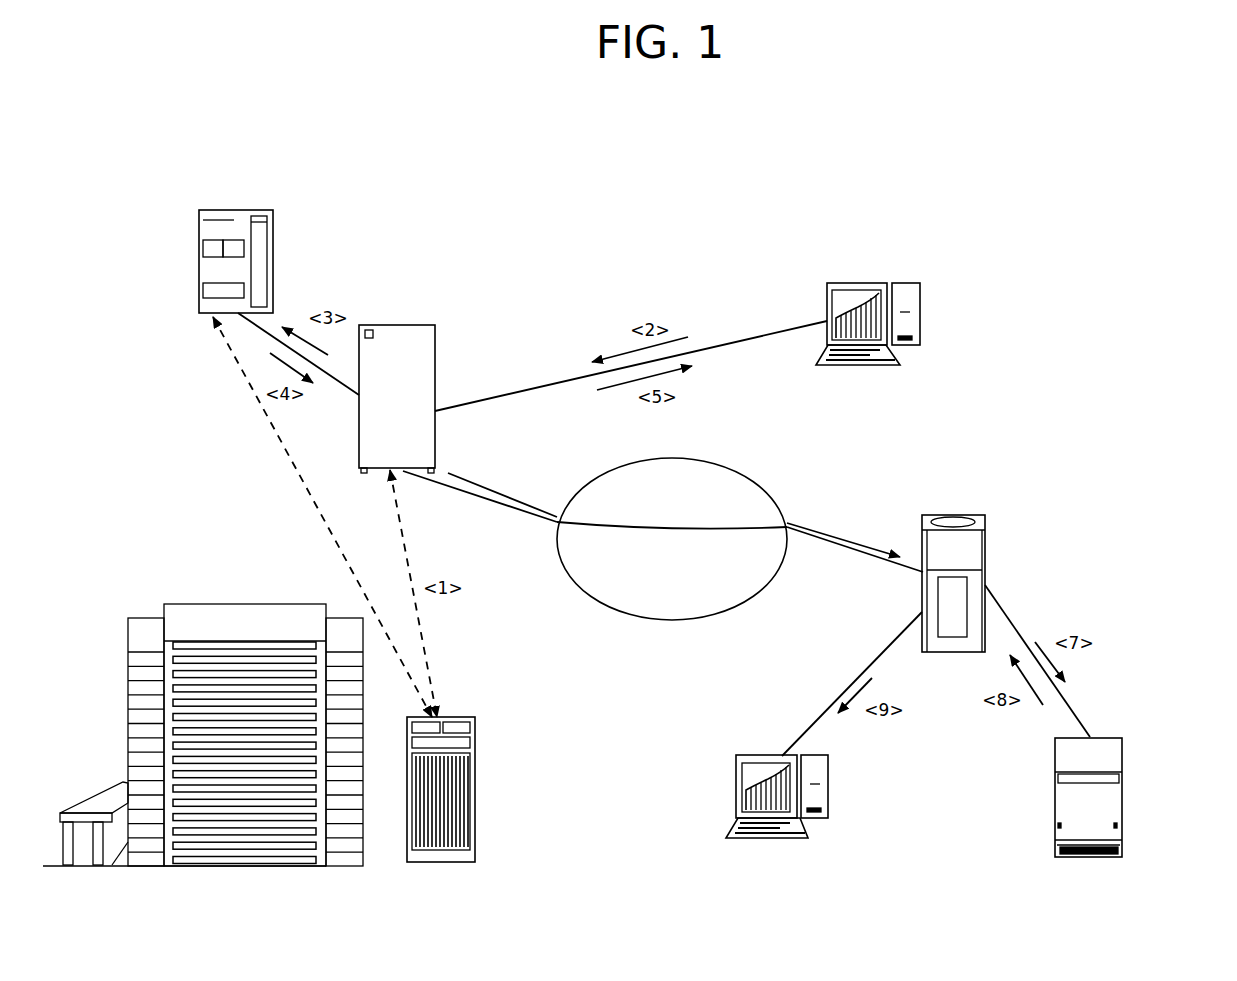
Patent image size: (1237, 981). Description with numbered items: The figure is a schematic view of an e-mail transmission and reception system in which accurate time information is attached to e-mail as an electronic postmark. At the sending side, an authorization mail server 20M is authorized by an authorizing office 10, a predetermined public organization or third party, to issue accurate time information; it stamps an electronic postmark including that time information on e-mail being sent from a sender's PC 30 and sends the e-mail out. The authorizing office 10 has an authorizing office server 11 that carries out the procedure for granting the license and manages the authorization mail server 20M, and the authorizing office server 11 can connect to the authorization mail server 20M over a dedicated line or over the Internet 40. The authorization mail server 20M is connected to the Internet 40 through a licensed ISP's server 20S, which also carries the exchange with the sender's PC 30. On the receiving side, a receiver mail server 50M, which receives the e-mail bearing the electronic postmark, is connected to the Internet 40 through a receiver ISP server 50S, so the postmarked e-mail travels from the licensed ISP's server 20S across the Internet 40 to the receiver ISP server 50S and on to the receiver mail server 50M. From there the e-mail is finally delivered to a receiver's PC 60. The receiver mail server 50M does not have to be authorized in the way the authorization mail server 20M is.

The authorizing office 10 is at (233, 604).
The authorizing office server 11 is at (477, 765).
The authorization mail server 20M is at (198, 275).
The licensed ISP's server 20S is at (435, 373).
The sender's PC 30 is at (919, 303).
The Internet 40 is at (710, 460).
The receiver ISP server 50S is at (985, 557).
The receiver mail server 50M is at (1125, 798).
The receiver's PC 60 is at (832, 797).